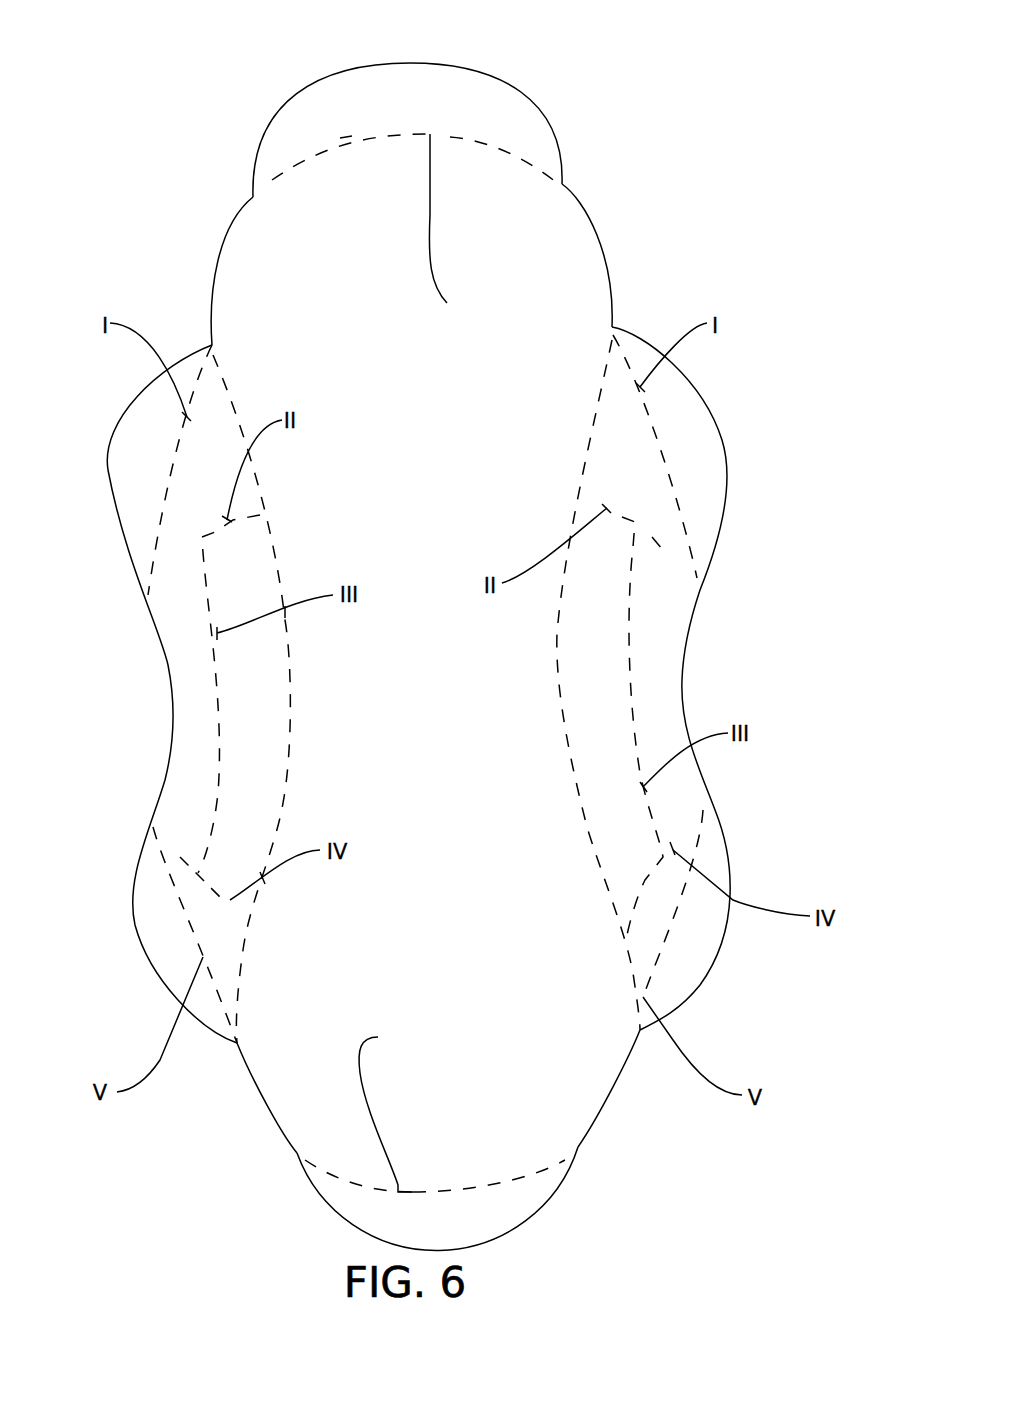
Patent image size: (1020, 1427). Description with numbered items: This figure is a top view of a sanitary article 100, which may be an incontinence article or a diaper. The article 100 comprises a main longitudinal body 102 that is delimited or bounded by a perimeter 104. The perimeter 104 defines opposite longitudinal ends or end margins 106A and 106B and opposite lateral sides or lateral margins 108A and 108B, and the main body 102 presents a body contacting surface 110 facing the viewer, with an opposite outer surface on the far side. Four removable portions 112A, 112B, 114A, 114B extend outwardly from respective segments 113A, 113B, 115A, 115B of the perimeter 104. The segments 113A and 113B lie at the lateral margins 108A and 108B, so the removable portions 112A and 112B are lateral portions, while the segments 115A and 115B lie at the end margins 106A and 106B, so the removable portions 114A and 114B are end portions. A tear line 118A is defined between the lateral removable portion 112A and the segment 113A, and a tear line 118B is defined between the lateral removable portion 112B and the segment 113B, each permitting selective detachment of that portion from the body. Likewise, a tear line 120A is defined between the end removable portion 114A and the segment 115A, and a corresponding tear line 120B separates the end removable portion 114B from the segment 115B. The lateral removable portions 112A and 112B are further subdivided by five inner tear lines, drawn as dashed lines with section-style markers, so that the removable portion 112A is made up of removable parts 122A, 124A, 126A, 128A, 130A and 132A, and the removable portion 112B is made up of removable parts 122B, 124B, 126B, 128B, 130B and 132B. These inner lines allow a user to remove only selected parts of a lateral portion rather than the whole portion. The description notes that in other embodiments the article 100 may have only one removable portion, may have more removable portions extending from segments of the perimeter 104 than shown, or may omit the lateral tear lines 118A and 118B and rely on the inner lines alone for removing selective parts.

The sanitary article 100 is at (601, 96).
The main longitudinal body 102 is at (200, 213).
The perimeter 104 is at (592, 230).
The longitudinal end (end margin) 106A is at (350, 140).
The longitudinal end (end margin) 106B is at (447, 1192).
The lateral side (lateral margin) 108A is at (290, 740).
The lateral side (lateral margin) 108B is at (558, 687).
The body contacting surface 110 is at (346, 438).
The removable portion (lateral portion) 112A is at (163, 650).
The removable portion (lateral portion) 112B is at (683, 698).
The perimeter segment 113A is at (287, 780).
The perimeter segment 113B is at (573, 787).
The removable portion (end portion) 114A is at (353, 97).
The removable portion (end portion) 114B is at (552, 1197).
The perimeter segment 115A is at (349, 162).
The perimeter segment 115B is at (516, 1163).
The tear line 118A is at (476, 134).
The tear line 118B is at (551, 1167).
The tear line 120A is at (280, 565).
The tear line 120B is at (582, 823).
The removable part 122A is at (170, 455).
The removable part 122B is at (655, 440).
The removable part 124A is at (172, 486).
The removable part 124B is at (595, 496).
The removable part 126A is at (150, 616).
The removable part 126B is at (632, 601).
The removable part 128A is at (227, 705).
The removable part 128B is at (567, 721).
The removable part 130A is at (192, 928).
The removable part 130B is at (617, 913).
The removable part 132A is at (144, 955).
The removable part 132B is at (660, 943).